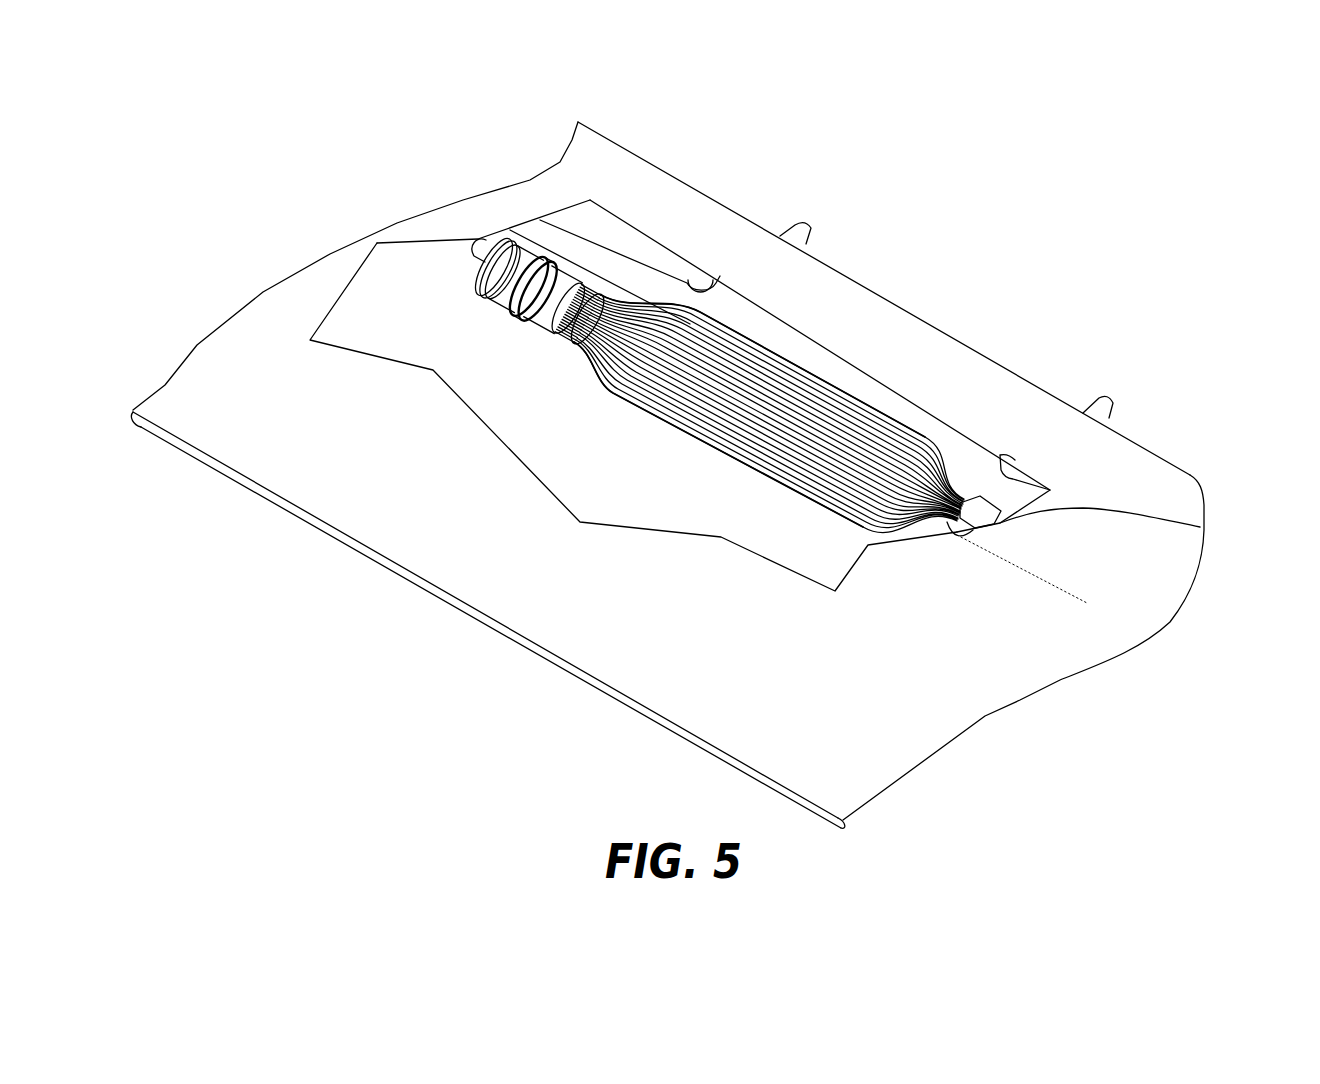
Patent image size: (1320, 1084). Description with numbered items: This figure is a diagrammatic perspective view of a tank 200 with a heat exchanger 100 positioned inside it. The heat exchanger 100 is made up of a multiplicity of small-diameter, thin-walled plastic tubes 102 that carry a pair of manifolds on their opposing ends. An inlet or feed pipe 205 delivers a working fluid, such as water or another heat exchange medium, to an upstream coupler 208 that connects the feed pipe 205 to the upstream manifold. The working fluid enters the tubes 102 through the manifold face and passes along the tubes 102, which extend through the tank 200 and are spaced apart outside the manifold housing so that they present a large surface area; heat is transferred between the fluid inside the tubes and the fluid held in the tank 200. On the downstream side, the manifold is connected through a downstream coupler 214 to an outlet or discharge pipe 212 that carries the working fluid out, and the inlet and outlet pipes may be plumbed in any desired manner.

The heat exchanger 100 is at (716, 407).
The plastic tubes 102 is at (727, 440).
The tank 200 is at (718, 475).
The feed pipe 205 is at (798, 223).
The upstream coupler 208 is at (520, 266).
The discharge pipe 212 is at (1108, 397).
The downstream coupler 214 is at (1200, 527).